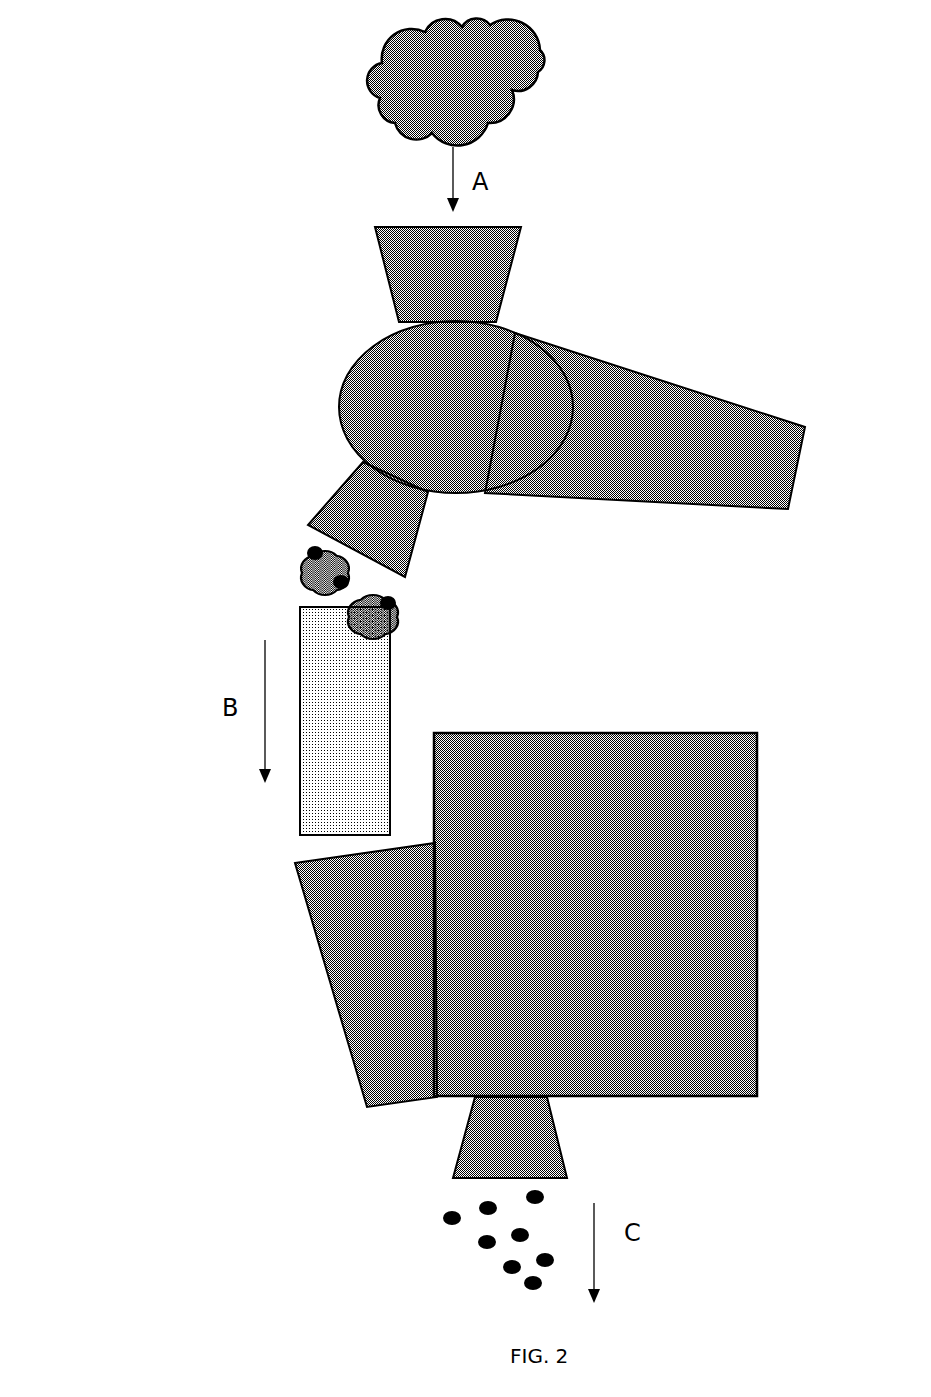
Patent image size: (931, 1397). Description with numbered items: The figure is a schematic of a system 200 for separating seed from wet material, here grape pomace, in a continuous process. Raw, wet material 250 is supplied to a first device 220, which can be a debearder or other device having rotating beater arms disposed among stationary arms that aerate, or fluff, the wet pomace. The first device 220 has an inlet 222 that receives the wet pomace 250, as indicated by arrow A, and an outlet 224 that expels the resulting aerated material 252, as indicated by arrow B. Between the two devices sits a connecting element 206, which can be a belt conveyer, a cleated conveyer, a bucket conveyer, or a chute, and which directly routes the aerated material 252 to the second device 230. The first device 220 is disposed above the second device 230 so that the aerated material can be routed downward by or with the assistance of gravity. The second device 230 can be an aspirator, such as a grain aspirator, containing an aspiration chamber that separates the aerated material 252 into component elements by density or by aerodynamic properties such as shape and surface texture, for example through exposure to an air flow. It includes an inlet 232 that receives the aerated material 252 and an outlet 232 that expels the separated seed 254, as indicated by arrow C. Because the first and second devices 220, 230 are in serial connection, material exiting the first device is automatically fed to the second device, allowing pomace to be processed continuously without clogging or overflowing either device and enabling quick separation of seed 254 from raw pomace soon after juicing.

The system 200 is at (218, 247).
The wet material 250 is at (548, 53).
The inlet 222 is at (510, 277).
The first device 220 is at (474, 413).
The outlet 224 is at (325, 495).
The aerated material 252 is at (272, 570).
The connecting element 206 is at (360, 731).
The second device 230 is at (602, 924).
The inlet and outlet 232 is at (327, 985).
The seed 254 is at (437, 1260).